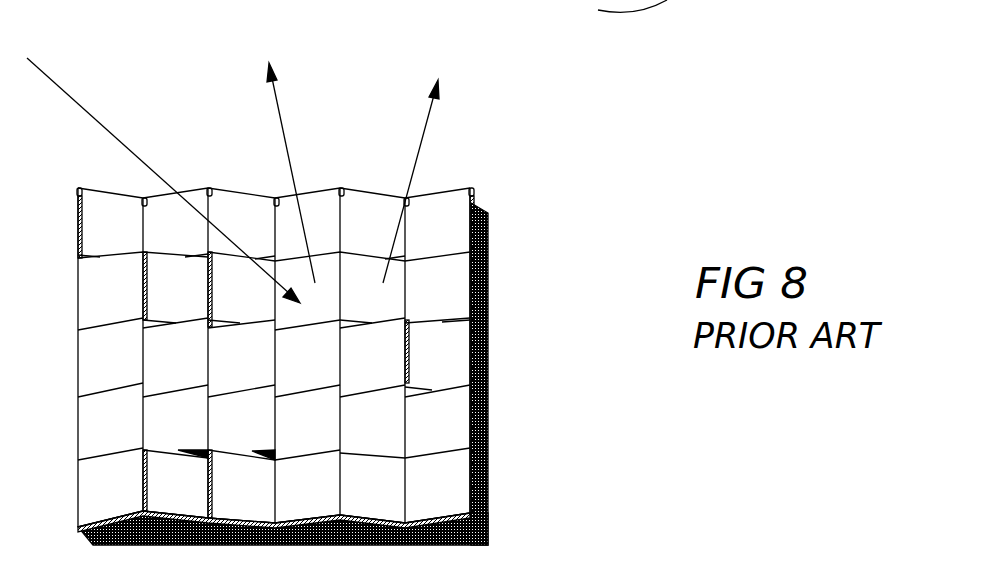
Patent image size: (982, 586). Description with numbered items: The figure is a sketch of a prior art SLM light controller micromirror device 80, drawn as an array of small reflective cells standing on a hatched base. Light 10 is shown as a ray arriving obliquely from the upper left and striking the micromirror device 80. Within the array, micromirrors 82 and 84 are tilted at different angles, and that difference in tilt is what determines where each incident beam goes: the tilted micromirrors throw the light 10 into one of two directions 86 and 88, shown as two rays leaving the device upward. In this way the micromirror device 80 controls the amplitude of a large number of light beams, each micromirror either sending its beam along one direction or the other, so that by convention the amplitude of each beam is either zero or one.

The light 10 is at (113, 132).
The SLM light controller micromirror device 80 is at (532, 473).
The micromirror 82 is at (328, 300).
The micromirror 84 is at (380, 297).
The direction 86 is at (282, 148).
The direction 88 is at (418, 167).